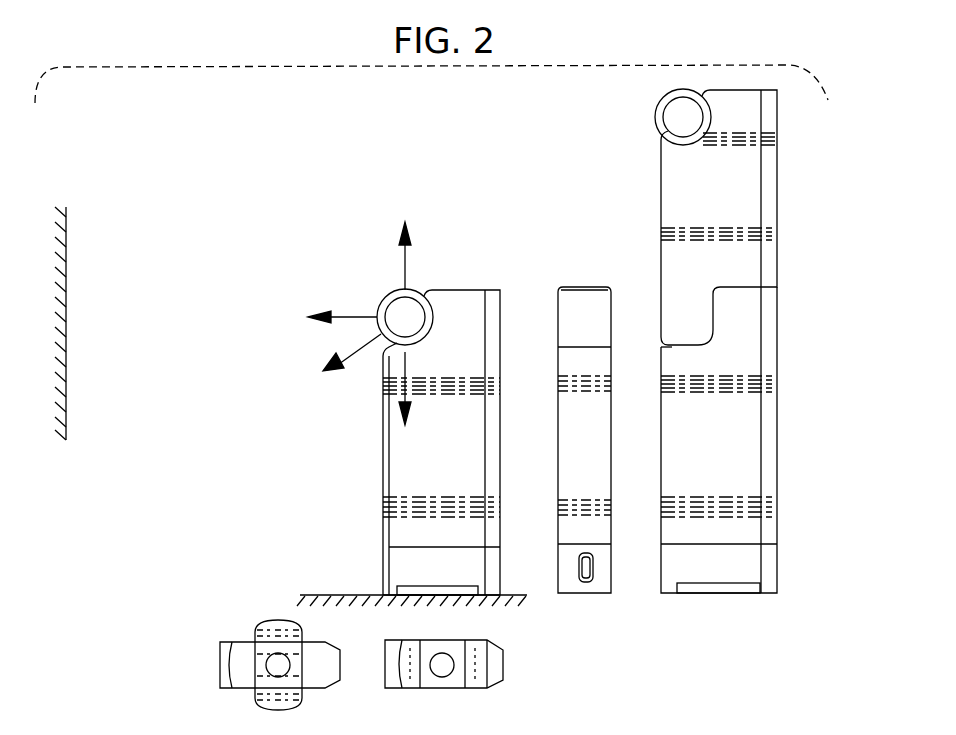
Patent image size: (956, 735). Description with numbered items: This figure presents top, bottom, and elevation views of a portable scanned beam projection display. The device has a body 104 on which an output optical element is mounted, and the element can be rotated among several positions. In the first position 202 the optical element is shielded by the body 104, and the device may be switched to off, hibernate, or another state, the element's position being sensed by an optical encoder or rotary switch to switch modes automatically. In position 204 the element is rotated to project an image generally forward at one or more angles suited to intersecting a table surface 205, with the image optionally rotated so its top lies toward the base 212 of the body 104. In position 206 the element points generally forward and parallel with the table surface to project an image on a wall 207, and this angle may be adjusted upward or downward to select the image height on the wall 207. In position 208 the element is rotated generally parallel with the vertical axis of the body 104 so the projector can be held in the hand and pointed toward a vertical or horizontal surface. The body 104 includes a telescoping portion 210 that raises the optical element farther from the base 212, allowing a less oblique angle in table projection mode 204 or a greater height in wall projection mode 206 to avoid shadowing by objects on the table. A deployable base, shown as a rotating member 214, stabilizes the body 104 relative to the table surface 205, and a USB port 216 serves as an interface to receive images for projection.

The body 104 is at (387, 445).
The first position 202 is at (388, 385).
The table projection position 204 is at (373, 341).
The table surface 205 is at (341, 594).
The wall projection position 206 is at (320, 316).
The wall 207 is at (66, 287).
The handheld position 208 is at (400, 268).
The telescoping portion 210 is at (660, 198).
The base 212 is at (770, 593).
The rotating member 214 is at (278, 623).
The USB port 216 is at (595, 578).